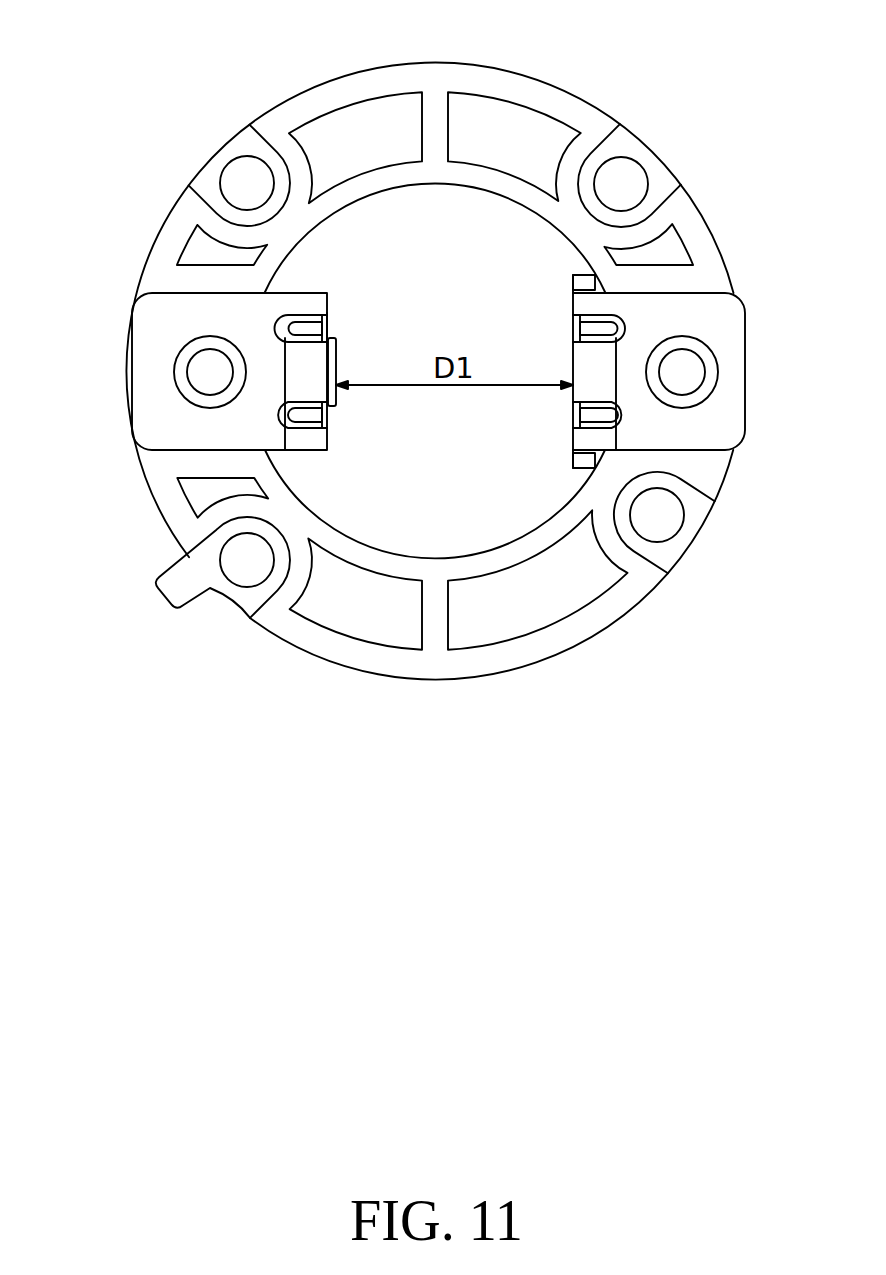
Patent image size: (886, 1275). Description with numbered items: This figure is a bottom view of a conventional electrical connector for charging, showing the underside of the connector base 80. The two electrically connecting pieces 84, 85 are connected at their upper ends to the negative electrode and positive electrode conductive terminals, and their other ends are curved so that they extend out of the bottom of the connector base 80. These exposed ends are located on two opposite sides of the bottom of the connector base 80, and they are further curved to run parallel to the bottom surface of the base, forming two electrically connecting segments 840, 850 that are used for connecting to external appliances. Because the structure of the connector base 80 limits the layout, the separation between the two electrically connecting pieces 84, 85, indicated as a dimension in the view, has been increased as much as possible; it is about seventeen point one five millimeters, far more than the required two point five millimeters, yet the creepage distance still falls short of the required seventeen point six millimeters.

The connector base 80 is at (536, 80).
The electrically connecting piece 84 is at (573, 281).
The electrically connecting piece 85 is at (327, 342).
The electrically connecting segment 840 is at (723, 320).
The electrically connecting segment 850 is at (153, 337).